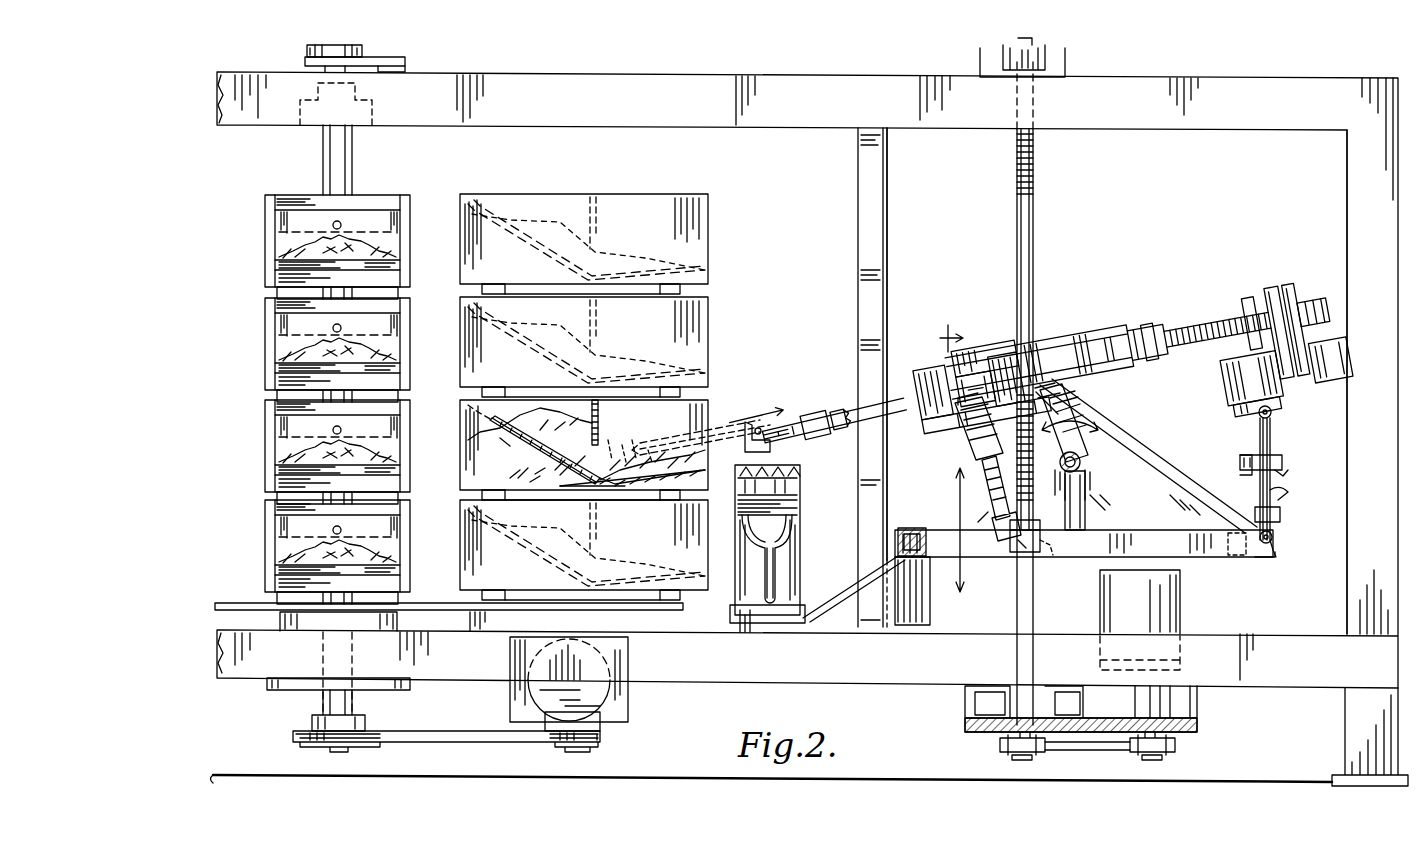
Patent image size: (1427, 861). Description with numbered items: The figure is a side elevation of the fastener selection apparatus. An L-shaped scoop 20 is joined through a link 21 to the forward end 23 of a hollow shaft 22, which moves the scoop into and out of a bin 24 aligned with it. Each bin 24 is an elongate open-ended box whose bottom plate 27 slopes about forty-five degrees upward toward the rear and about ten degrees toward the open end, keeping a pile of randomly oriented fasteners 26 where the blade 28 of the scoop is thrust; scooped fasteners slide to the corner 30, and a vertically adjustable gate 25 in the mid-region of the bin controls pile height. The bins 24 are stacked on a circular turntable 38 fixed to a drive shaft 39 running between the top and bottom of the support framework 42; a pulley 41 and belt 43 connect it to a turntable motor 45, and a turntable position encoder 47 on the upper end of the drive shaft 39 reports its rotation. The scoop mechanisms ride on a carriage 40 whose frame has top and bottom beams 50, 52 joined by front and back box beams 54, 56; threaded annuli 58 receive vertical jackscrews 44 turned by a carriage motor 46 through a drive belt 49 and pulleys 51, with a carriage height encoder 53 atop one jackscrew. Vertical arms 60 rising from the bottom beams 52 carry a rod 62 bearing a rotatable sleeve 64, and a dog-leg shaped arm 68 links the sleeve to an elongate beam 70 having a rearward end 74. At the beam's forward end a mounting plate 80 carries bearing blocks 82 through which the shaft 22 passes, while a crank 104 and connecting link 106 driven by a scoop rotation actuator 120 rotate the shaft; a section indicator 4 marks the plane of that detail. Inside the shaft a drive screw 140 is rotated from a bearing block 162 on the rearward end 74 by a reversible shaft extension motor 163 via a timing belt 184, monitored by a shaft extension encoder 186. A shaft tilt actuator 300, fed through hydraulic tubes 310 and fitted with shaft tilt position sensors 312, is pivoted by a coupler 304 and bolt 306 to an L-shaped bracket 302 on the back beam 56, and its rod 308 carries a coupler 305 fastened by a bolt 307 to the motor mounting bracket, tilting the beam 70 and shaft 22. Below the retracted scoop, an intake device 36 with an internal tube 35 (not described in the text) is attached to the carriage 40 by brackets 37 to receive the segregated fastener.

The section line 4 is at (945, 457).
The scoop 20 is at (652, 450).
The link 21 is at (797, 410).
The shaft 22 is at (986, 415).
The forward end 23 is at (850, 380).
The bin 24 is at (458, 244).
The gate 25 is at (272, 224).
The fasteners 26 is at (558, 468).
The bottom plate 27 is at (498, 440).
The blade 28 is at (712, 462).
The corner 30 is at (632, 455).
The suction tube 35 is at (776, 560).
The intake device 36 is at (815, 502).
The brackets 37 is at (848, 604).
The turntable 38 is at (548, 606).
The drive shaft 39 is at (353, 168).
The carriage 40 is at (1156, 456).
The pulley 41 is at (366, 720).
The support framework 42 is at (1264, 146).
The belt 43 is at (443, 734).
The jackscrews 44 is at (1035, 176).
The turntable motor 45 is at (628, 714).
The carriage motor 46 is at (1168, 706).
The turntable position encoder 47 is at (360, 46).
The drive belt 49 is at (1085, 746).
The top beam 50 is at (1039, 362).
The pulleys 51 is at (1002, 748).
The bottom beam 52 is at (1185, 556).
The carriage height encoder 53 is at (1040, 60).
The front box beam 54 is at (920, 562).
The back box beam 56 is at (1228, 560).
The internally threaded annulus 58 is at (1052, 560).
The vertical arm 60 is at (1086, 505).
The rod 62 is at (1082, 460).
The sleeve 64 is at (1082, 470).
The dog-leg shaped arm 68 is at (1072, 400).
The beam 70 is at (1148, 342).
The rearward end 74 is at (1251, 323).
The mounting plate 80 is at (976, 389).
The bearing blocks 82 is at (969, 386).
The crank 104 is at (985, 358).
The connecting link 106 is at (950, 446).
The scoop rotation actuator 120 is at (953, 483).
The drive screw 140 is at (1217, 329).
The bearing block 162 is at (1287, 331).
The shaft extension motor 163 is at (1330, 360).
The timing belt 184 is at (1313, 312).
The shaft extension encoder 186 is at (1251, 378).
The shaft tilt actuator 300 is at (1280, 462).
The L-shaped bracket 302 is at (1262, 560).
The coupler 304 is at (1274, 540).
The coupler 305 is at (1270, 420).
The bolt 306 is at (1276, 555).
The bolt 307 is at (1257, 407).
The rod 308 is at (1260, 448).
The tubes 310 is at (1285, 466).
The shaft tilt position sensors 312 is at (1240, 462).